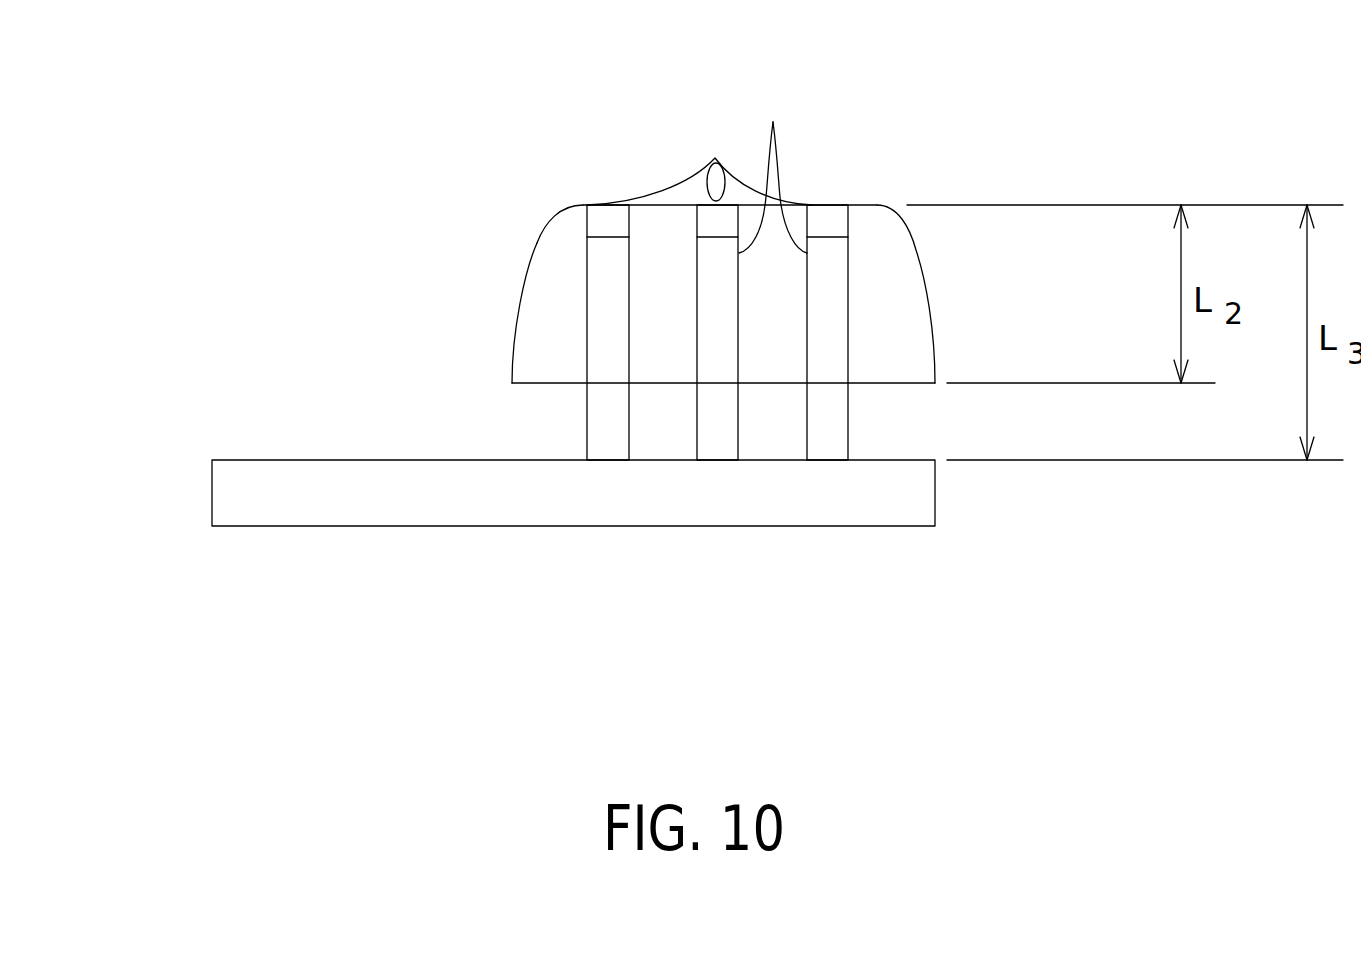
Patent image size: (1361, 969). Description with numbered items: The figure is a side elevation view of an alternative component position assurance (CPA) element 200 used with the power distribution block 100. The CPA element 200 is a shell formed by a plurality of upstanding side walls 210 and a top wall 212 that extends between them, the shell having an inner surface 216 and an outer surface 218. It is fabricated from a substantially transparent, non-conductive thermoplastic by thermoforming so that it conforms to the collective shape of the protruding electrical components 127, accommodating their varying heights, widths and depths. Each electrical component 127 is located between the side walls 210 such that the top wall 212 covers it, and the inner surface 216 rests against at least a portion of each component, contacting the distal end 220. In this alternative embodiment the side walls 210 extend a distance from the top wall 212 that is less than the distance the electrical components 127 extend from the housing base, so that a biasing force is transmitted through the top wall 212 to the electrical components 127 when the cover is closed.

The power distribution block 100 is at (203, 492).
The electrical components 127 is at (609, 368).
The component position assurance (CPA) element 200 is at (924, 175).
The side walls 210 is at (512, 326).
The top wall 212 is at (602, 205).
The inner surface 216 is at (542, 238).
The outer surface 218 is at (557, 205).
The distal end 220 is at (773, 162).